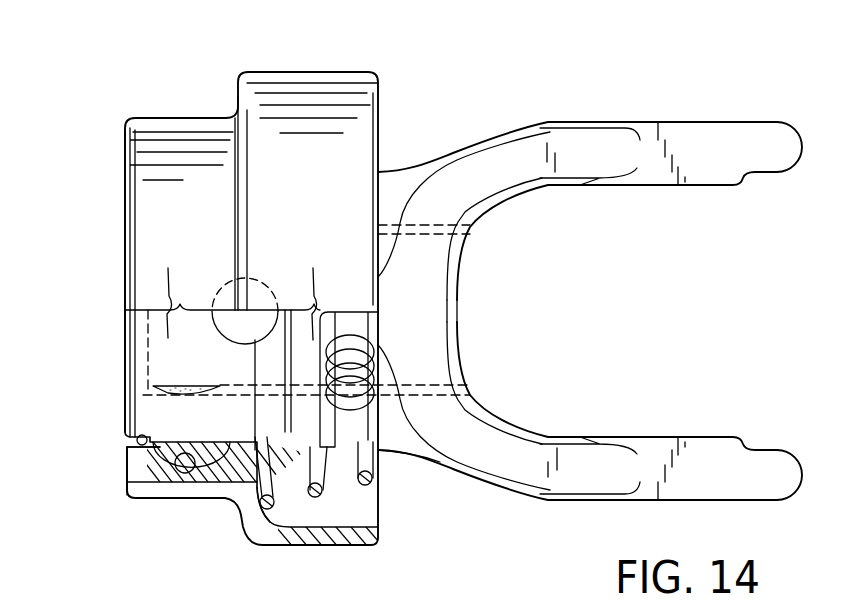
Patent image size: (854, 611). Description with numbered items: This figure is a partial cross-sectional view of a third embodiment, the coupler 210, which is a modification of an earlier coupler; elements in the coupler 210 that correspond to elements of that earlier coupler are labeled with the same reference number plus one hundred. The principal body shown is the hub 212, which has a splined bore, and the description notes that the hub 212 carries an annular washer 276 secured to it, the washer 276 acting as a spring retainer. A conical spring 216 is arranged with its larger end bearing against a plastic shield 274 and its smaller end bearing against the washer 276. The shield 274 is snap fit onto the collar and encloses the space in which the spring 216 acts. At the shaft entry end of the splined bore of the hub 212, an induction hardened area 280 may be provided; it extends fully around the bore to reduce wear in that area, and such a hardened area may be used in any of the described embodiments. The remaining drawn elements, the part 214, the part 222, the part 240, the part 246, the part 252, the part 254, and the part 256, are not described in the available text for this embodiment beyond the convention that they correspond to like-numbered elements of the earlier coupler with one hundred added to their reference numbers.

The coupler 210 is at (162, 102).
The hub 212 is at (124, 400).
The retainer 214 is at (124, 473).
The conical spring 216 is at (297, 493).
The washer 222 is at (133, 447).
The cross hole 240 is at (233, 322).
The ball 246 is at (190, 468).
The spring 252 is at (379, 326).
The pin 254 is at (273, 450).
The pin 256 is at (337, 447).
The plastic shield 274 is at (340, 547).
The annular washer 276 is at (378, 470).
The induction hardened area 280 is at (165, 382).